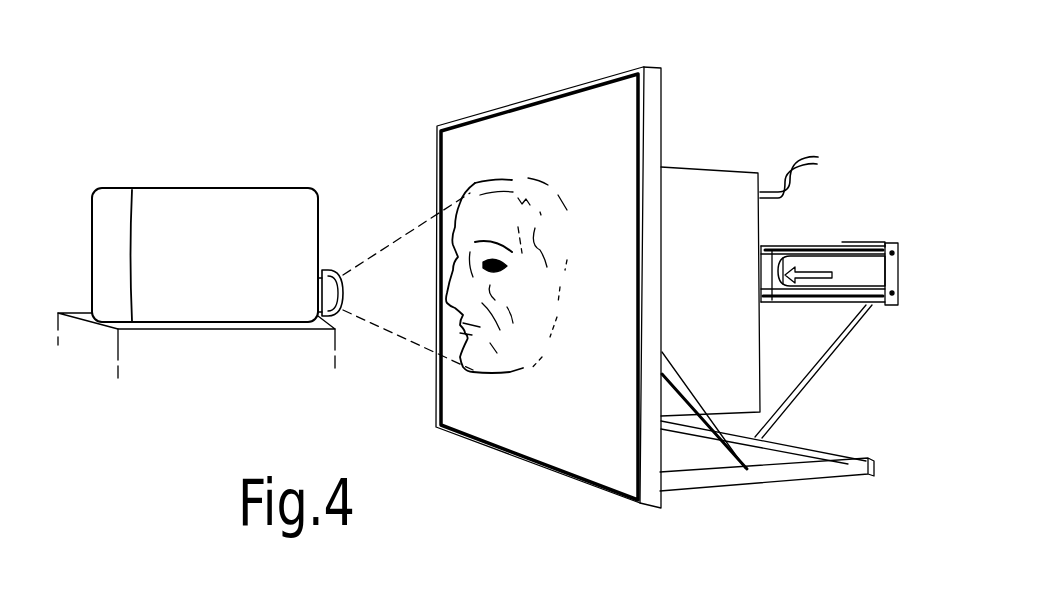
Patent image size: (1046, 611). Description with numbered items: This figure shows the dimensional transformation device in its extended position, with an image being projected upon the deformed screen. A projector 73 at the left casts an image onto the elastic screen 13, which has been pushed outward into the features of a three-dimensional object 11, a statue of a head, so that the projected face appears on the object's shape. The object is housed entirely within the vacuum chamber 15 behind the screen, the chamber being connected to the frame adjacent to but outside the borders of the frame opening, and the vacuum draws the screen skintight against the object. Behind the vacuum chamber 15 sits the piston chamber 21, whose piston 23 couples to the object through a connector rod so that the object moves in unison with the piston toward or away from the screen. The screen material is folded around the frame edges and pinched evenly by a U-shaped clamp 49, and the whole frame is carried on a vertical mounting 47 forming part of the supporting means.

The three-dimensional object 11 is at (468, 373).
The elastic screen 13 is at (575, 133).
The vacuum chamber 15 is at (677, 192).
The piston chamber 21 is at (883, 307).
The piston 23 is at (782, 250).
The vertical mounting 47 is at (826, 473).
The U-shaped clamp 49 is at (598, 490).
The projector 73 is at (285, 207).